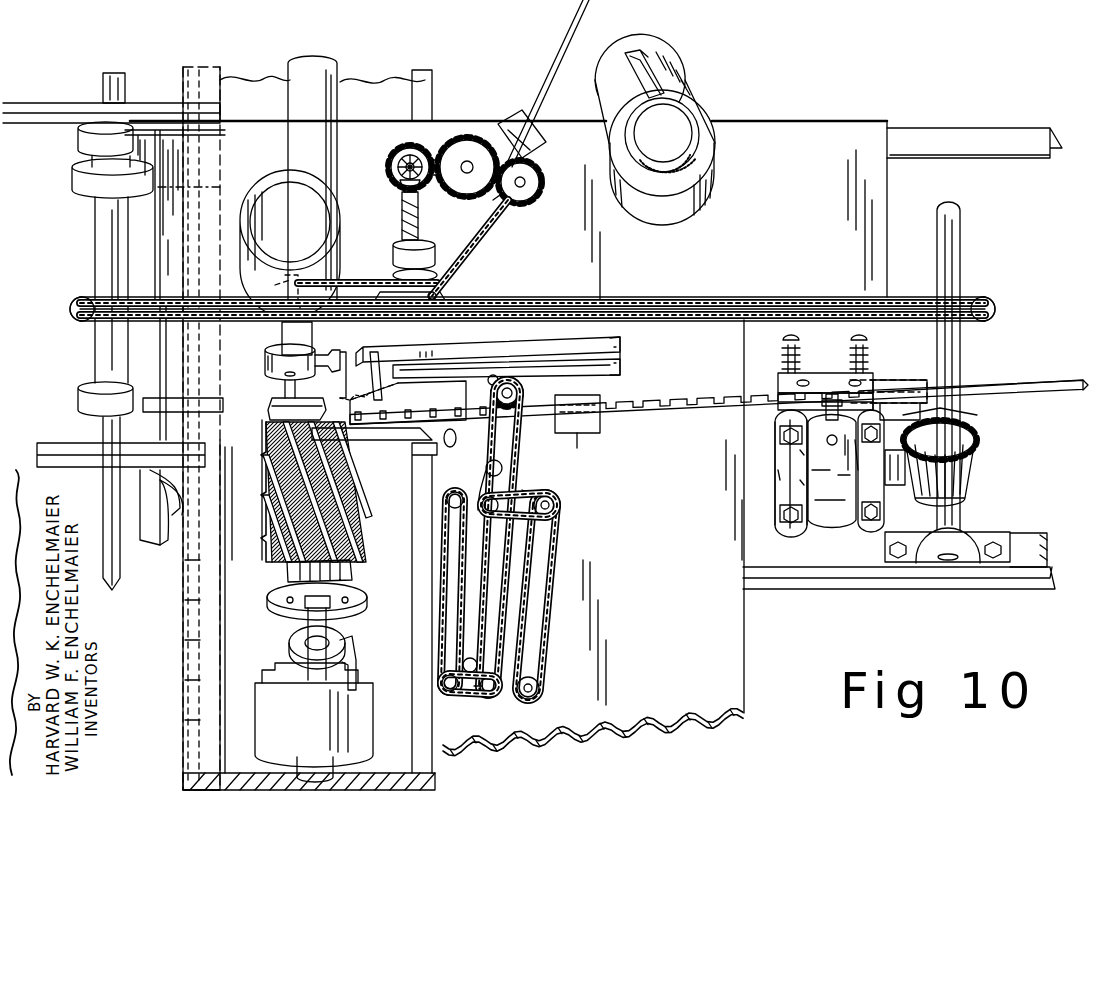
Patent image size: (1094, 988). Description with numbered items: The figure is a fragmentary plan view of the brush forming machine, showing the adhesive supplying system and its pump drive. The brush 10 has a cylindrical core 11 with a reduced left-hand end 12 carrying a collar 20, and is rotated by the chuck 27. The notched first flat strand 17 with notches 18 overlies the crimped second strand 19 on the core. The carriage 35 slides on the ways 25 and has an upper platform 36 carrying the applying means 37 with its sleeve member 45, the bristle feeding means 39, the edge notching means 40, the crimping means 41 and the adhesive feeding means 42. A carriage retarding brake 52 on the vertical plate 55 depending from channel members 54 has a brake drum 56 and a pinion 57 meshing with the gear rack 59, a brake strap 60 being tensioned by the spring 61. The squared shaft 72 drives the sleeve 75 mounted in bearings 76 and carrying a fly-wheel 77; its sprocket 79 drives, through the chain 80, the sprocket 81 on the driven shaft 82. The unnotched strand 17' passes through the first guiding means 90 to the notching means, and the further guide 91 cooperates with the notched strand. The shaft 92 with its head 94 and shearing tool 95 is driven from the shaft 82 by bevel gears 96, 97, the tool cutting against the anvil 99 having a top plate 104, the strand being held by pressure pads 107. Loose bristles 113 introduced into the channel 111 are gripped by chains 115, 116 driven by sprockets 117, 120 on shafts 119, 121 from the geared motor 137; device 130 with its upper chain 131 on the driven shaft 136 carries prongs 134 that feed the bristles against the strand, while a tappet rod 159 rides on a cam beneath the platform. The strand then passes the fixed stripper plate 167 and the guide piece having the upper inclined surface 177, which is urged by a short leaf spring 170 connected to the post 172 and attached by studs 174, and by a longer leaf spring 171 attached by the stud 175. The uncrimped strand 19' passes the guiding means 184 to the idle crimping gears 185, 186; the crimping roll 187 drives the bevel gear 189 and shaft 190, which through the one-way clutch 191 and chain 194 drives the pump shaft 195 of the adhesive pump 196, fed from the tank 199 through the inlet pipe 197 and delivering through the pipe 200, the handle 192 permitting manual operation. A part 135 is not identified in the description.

The brush 10 is at (270, 518).
The circular cylindrical core 11 is at (305, 80).
The reduced diameter left-hand end 12 is at (340, 624).
The first flat strand 17 is at (716, 394).
The unnotched first strand 17' is at (982, 371).
The notch 18 is at (640, 410).
The second strand 19 is at (470, 248).
The uncrimped second strand 19' is at (542, 83).
The collar 20 is at (350, 576).
The longitudinal ways 25 is at (218, 80).
The chuck 27 is at (368, 716).
The carriage 35 is at (370, 118).
The upper platform 36 is at (822, 128).
The means for applying bristles, strands, and adhesive 37 is at (262, 425).
The bristle feeding means 39 is at (530, 488).
The edge notching means 40 is at (760, 440).
The crimping means 41 is at (495, 210).
The adhesive feeding means 42 is at (262, 348).
The bristle and strand applying member 45 is at (288, 404).
The carriage retarding brake 52 is at (157, 480).
The channel members 54 is at (48, 106).
The vertical plate 55 is at (148, 244).
The brake drum 56 is at (162, 520).
The pinion 57 is at (220, 480).
The gear rack 59 is at (192, 638).
The brake strap 60 is at (162, 508).
The adjustably tensioned spring 61 is at (160, 548).
The squared shaft 72 is at (108, 498).
The sleeve member 75 is at (94, 266).
The aligned bearings 76 is at (76, 148).
The fly-wheel 77 is at (80, 192).
The sprocket 79 is at (96, 322).
The chain 80 is at (652, 296).
The sprocket 81 is at (966, 318).
The driven shaft 82 is at (962, 242).
The first guiding means 90 is at (898, 384).
The further guide 91 is at (580, 440).
The short shaft 92 is at (812, 520).
The enlarged head 94 is at (852, 512).
The shearing tool 95 is at (828, 386).
The bevel gear 96 is at (976, 434).
The bevel gear 97 is at (958, 478).
The stationary anvil 99 is at (880, 372).
The top plate 104 is at (814, 370).
The channel pressure pads 107 is at (876, 380).
The preliminary bristle receiving channel 111 is at (512, 698).
The bristles 113 is at (472, 528).
The bristle feeding chain 115 is at (470, 662).
The bristle feeding chain 116 is at (528, 610).
The sprocket 117 is at (450, 670).
The shaft 119 is at (478, 692).
The driving sprocket 120 is at (540, 522).
The vertical shaft 121 is at (552, 508).
The bristle feeding device 130 is at (506, 460).
The upper chain 131 is at (494, 446).
The bristle engaging prongs 134 is at (512, 444).
The sprocket 135 is at (522, 392).
The driven shaft 136 is at (492, 384).
The geared motor 137 is at (694, 120).
The tappet rod 159 is at (448, 442).
The fixed stripper plate 167 is at (378, 440).
The leaf spring 170 is at (508, 360).
The leaf spring 171 is at (438, 350).
The vertical post 172 is at (620, 350).
The studs 174 is at (410, 400).
The stud 175 is at (392, 364).
The upper inclined surface 177 is at (362, 398).
The strand guiding means 184 is at (540, 126).
The crimping gear 185 is at (538, 180).
The crimping gear 186 is at (474, 138).
The crimping roll 187 is at (386, 166).
The bevel gear 189 is at (432, 142).
The shaft 190 is at (400, 228).
The one-way clutch 191 is at (430, 246).
The handle 192 is at (442, 288).
The chain 194 is at (344, 280).
The pump shaft 195 is at (285, 282).
The adhesive delivering pump 196 is at (264, 342).
The inlet pipe 197 is at (290, 322).
The tank 199 is at (250, 186).
The pipe 200 is at (346, 380).